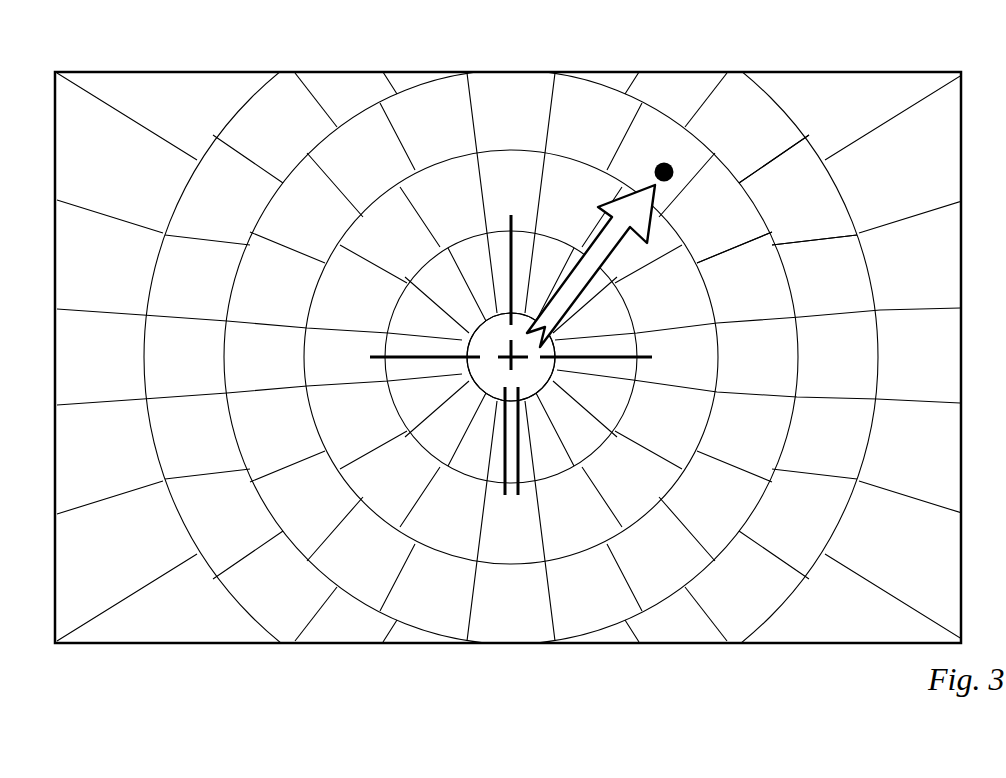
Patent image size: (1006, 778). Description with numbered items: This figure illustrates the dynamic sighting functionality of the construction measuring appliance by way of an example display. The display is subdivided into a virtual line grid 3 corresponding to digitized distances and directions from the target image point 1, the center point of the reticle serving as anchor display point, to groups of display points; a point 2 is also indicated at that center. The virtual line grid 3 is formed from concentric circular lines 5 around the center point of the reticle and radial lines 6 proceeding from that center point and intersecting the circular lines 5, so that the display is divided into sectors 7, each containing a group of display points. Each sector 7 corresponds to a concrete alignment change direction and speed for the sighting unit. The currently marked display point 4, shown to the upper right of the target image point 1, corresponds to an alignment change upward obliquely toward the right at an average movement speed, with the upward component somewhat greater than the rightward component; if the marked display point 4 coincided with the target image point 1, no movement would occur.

The target image point 1 is at (503, 258).
The center point 2 is at (441, 504).
The virtual line grid 3 is at (508, 372).
The marked display point 4 is at (600, 182).
The concentric circular lines 5 is at (511, 362).
The radial lines 6 is at (511, 334).
The sectors 7 is at (826, 159).